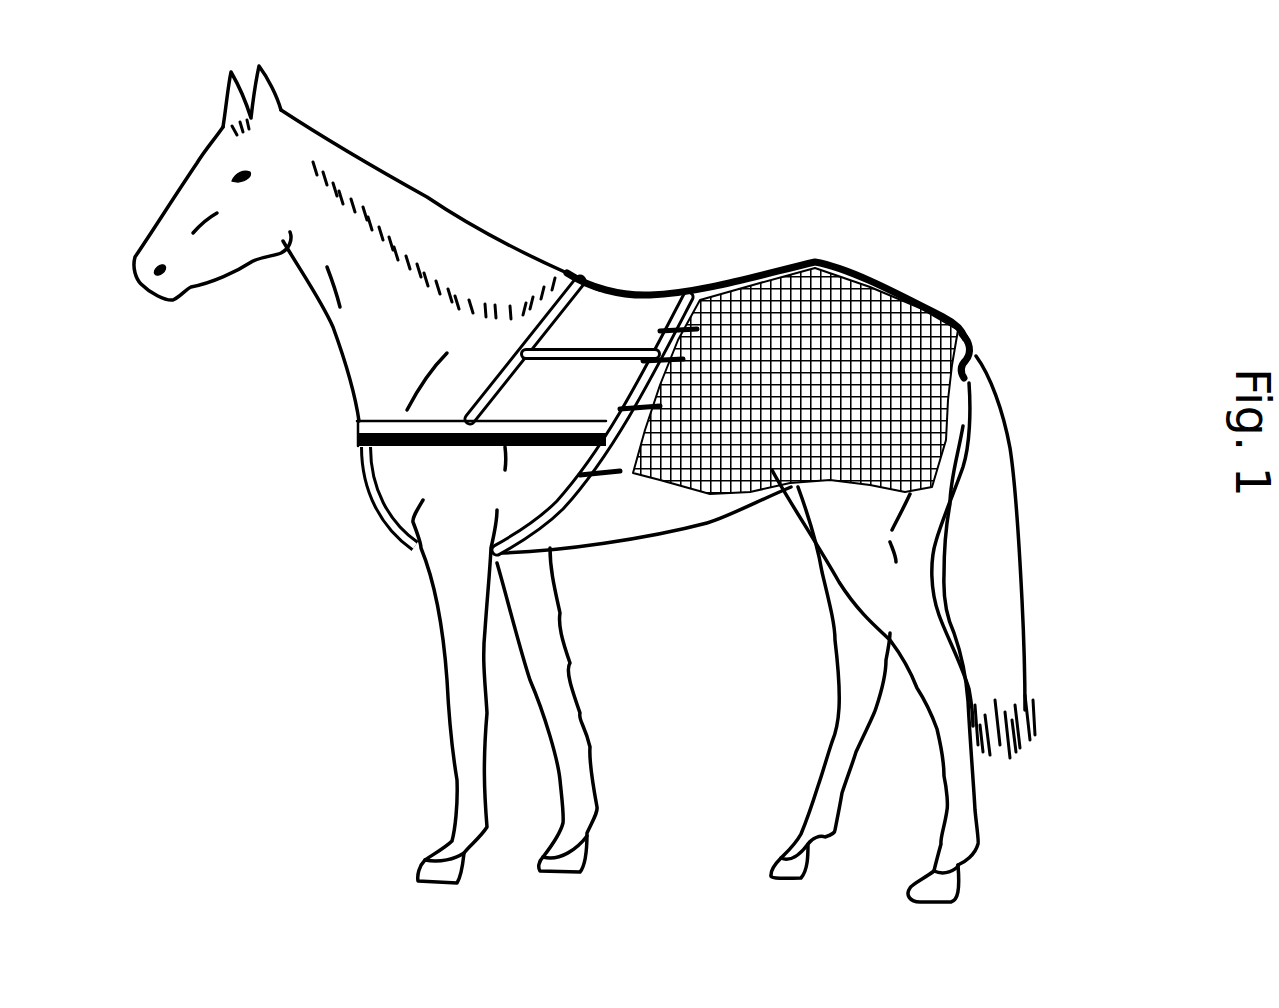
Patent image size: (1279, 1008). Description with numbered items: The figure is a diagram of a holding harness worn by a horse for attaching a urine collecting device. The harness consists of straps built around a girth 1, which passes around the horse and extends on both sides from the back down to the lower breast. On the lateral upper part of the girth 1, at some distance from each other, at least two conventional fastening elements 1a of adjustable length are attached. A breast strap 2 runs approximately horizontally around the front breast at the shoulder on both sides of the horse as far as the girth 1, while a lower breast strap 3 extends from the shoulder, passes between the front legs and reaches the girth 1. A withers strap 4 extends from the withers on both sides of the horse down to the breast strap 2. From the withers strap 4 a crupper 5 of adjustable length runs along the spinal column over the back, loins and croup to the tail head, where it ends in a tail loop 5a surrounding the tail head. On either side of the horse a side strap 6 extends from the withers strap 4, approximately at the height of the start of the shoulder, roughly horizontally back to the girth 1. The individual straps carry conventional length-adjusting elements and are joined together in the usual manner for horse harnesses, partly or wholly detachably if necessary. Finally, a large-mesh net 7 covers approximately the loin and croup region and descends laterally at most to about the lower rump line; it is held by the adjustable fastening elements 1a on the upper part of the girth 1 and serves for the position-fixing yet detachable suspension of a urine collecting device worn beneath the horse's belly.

The girth 1 is at (641, 286).
The fastening elements 1a is at (603, 480).
The breast strap 2 is at (423, 413).
The lower breast strap 3 is at (363, 493).
The withers strap 4 is at (500, 367).
The crupper 5 is at (835, 263).
The tail loop 5a is at (970, 320).
The side strap 6 is at (600, 347).
The net 7 is at (887, 374).